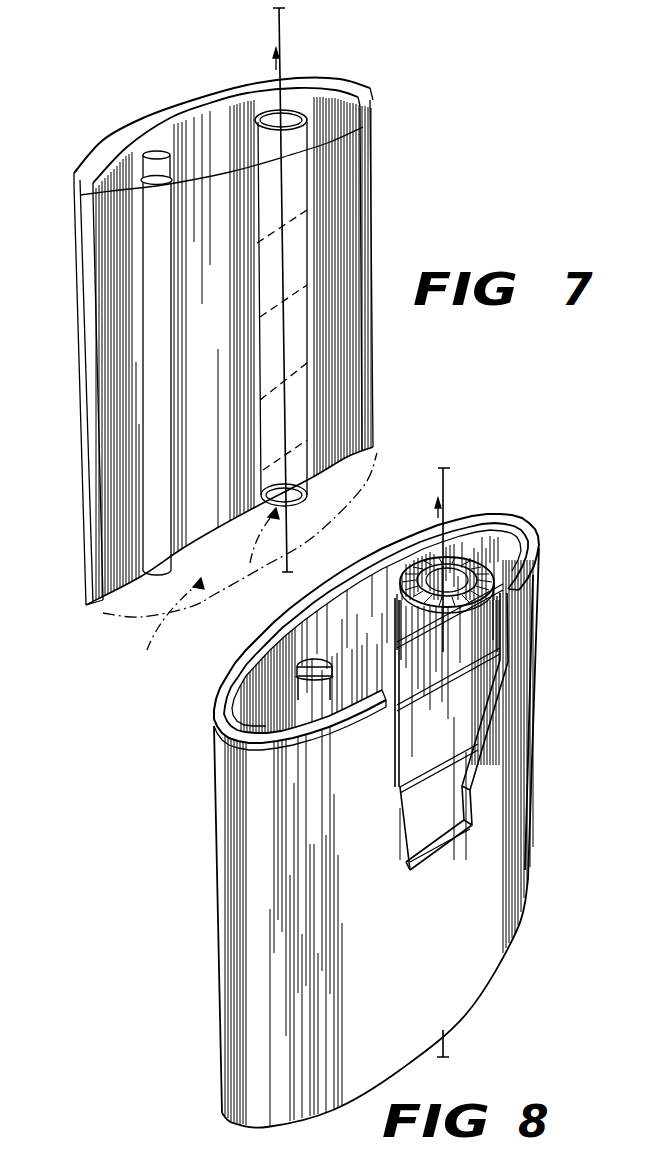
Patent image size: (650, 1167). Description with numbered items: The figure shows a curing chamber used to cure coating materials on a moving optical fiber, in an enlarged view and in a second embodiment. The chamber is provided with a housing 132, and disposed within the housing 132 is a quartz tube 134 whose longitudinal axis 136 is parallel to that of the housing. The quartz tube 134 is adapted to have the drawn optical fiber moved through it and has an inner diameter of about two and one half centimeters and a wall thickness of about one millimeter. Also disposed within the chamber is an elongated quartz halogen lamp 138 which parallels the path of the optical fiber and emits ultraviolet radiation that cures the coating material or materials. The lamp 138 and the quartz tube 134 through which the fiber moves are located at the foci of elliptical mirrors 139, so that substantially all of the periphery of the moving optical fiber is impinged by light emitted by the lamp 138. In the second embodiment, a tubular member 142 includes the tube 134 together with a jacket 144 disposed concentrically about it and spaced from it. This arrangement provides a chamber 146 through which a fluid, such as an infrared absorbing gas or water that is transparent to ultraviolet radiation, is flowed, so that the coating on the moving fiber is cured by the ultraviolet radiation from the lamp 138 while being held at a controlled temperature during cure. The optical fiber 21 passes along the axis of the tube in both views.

In FIG. 7, the pin 21 is at (281, 12).
In FIG. 8, the pin 21 is at (452, 473).
In FIG. 7, the housing 132 is at (170, 120).
In FIG. 8, the housing 132 is at (538, 619).
In FIG. 7, the quartz tube 134 is at (263, 215).
In FIG. 8, the quartz tube 134 is at (473, 540).
In FIG. 7, the longitudinal axis 136 is at (265, 110).
In FIG. 7, the quartz halogen lamp 138 is at (165, 352).
In FIG. 8, the quartz halogen lamp 138 is at (331, 700).
In FIG. 7, the elliptical mirrors 139 is at (102, 160).
In FIG. 8, the elliptical mirrors 139 is at (247, 676).
In FIG. 8, the tubular member 142 is at (395, 642).
In FIG. 8, the jacket 144 is at (400, 676).
In FIG. 8, the chamber 146 is at (430, 560).